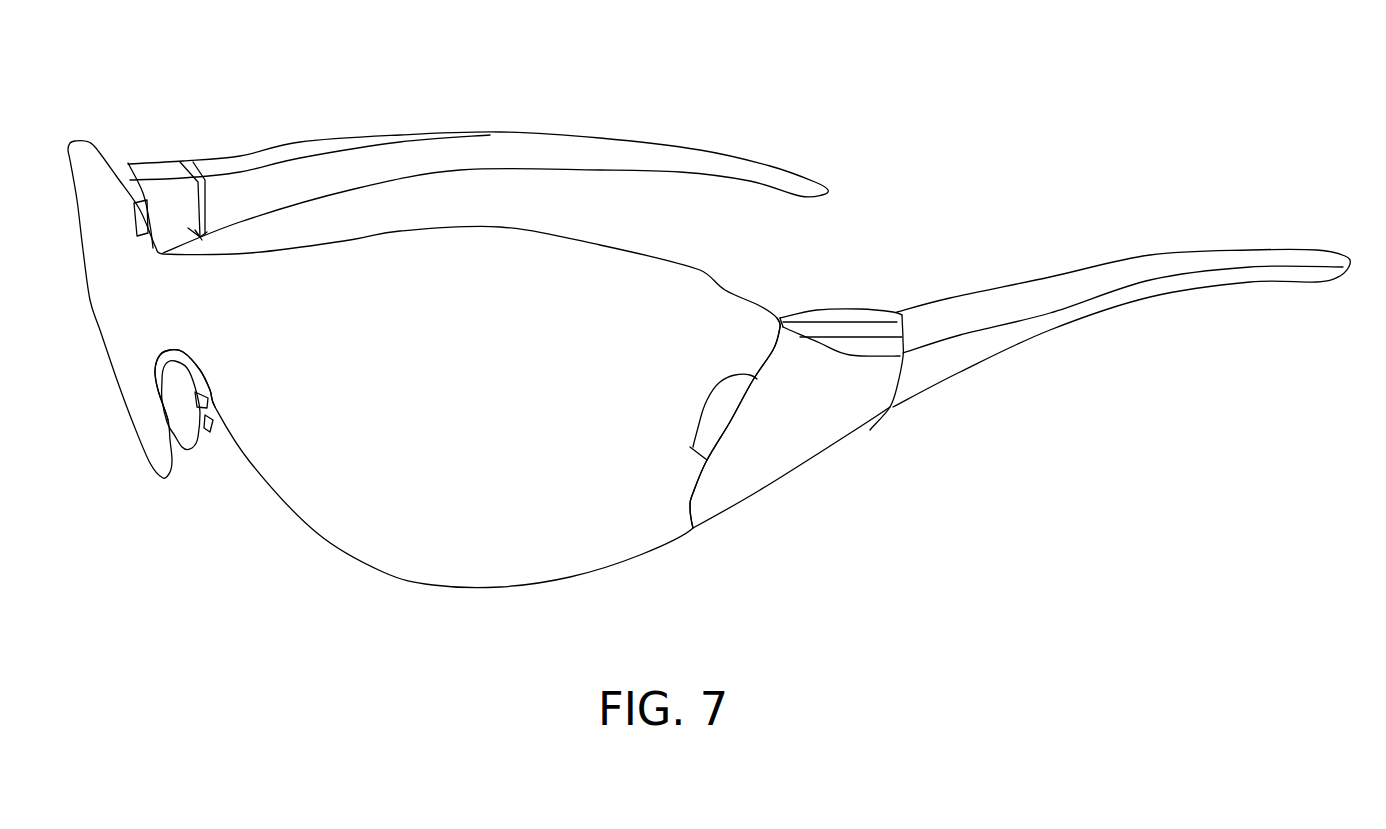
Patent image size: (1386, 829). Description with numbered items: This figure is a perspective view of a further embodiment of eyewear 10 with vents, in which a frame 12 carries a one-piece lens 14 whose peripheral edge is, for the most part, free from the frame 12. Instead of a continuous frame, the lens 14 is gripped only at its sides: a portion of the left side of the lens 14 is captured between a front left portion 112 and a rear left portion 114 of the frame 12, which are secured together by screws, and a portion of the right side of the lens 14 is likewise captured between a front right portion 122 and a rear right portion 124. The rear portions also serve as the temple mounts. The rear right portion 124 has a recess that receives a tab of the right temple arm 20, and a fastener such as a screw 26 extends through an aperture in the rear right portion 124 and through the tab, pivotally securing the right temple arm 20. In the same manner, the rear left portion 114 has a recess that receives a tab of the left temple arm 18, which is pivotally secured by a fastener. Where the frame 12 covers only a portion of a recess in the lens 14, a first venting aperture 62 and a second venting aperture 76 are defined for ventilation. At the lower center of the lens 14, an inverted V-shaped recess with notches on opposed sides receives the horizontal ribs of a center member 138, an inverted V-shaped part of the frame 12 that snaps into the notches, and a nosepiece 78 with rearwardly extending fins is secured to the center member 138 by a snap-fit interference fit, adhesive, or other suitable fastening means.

The eyewear 10 is at (978, 231).
The frame 12 is at (157, 353).
The lens 14 is at (477, 375).
The left temple arm 18 is at (1132, 293).
The right temple arm 20 is at (668, 155).
The screw 26 is at (193, 162).
The first venting aperture 62 is at (703, 428).
The second venting aperture 76 is at (130, 165).
The nosepiece 78 is at (193, 443).
The front left portion 112 is at (810, 453).
The rear left portion 114 is at (845, 318).
The front right portion 122 is at (177, 162).
The rear right portion 124 is at (200, 237).
The center member 138 is at (168, 358).